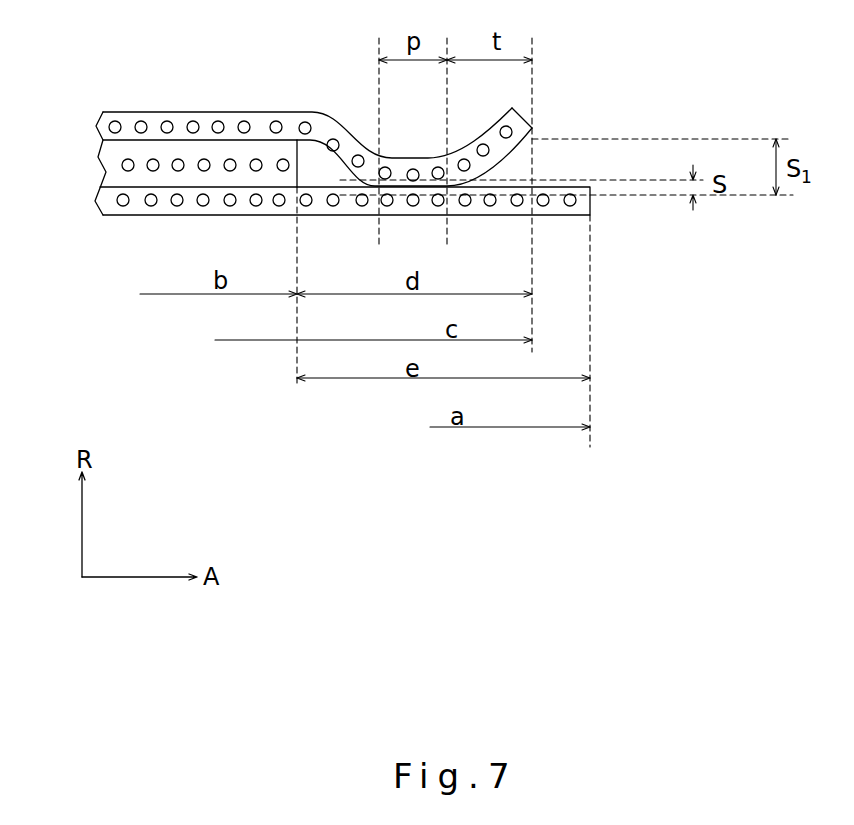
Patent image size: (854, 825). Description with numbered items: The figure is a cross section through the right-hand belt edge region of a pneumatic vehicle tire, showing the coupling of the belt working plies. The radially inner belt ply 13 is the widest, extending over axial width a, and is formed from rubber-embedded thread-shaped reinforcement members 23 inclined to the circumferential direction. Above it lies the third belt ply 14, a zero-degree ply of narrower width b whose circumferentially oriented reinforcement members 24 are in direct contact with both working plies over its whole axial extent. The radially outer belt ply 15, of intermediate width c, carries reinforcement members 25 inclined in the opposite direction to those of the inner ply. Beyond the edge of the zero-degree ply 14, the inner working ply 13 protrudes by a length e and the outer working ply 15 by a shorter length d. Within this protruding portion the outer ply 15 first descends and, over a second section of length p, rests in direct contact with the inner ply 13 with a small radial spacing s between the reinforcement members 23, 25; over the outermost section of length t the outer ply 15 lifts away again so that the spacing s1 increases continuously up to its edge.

The radially inner belt ply 13 is at (324, 233).
The third belt ply 14 is at (163, 150).
The radially outer belt ply 15 is at (317, 109).
The reinforcement members 23 is at (176, 205).
The holes of intermediate sheet 24 is at (182, 163).
The reinforcement members 25 is at (245, 120).